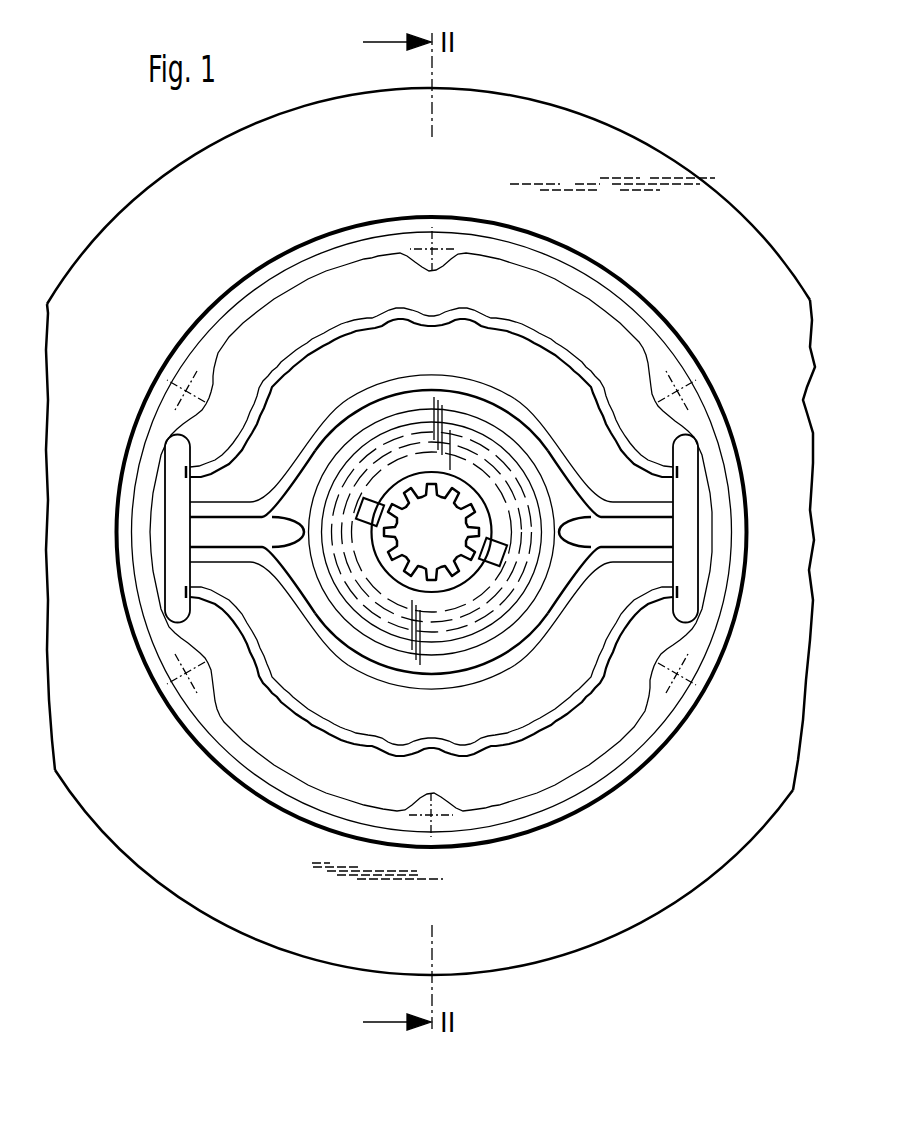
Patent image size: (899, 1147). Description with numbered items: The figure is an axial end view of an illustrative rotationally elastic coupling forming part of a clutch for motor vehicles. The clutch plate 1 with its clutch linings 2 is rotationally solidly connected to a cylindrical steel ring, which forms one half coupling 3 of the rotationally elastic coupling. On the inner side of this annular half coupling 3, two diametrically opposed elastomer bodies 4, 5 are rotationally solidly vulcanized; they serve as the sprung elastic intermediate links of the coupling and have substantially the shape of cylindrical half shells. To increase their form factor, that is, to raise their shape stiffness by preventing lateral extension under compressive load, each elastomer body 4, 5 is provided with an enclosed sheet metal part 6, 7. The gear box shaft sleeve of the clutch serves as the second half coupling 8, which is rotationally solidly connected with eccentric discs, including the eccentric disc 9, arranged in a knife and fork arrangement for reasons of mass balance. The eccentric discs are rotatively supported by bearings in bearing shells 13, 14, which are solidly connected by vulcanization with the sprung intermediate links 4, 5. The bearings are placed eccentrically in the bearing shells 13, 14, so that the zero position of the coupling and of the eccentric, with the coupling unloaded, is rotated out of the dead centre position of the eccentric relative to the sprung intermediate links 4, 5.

The clutch plate 1 is at (330, 245).
The clutch linings 2 is at (562, 113).
The half coupling 3 is at (268, 290).
The elastomer body 4 is at (250, 338).
The elastomer body 5 is at (287, 762).
The sheet metal part 6 is at (188, 472).
The sheet metal part 7 is at (188, 596).
The second half coupling 8 is at (445, 590).
The eccentric disc 9 is at (490, 445).
The bearing shell 13 is at (300, 480).
The bearing shell 14 is at (565, 580).